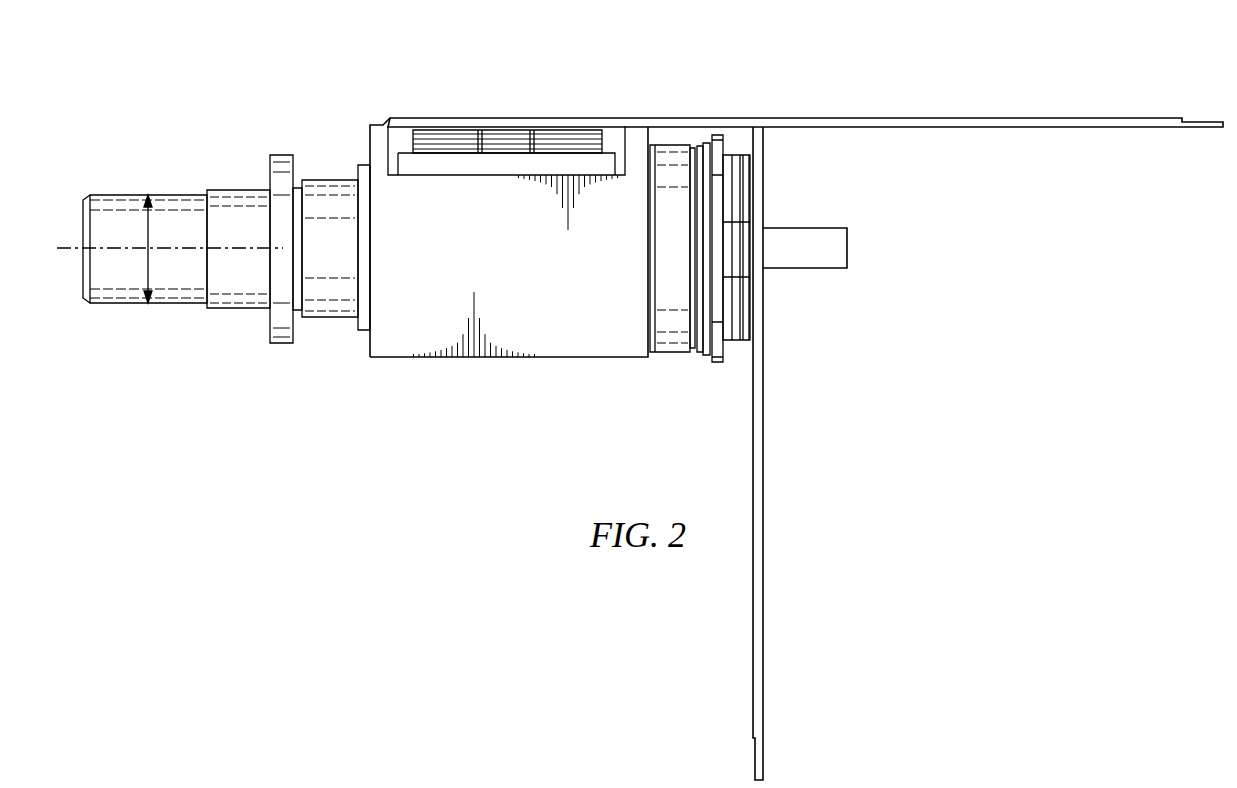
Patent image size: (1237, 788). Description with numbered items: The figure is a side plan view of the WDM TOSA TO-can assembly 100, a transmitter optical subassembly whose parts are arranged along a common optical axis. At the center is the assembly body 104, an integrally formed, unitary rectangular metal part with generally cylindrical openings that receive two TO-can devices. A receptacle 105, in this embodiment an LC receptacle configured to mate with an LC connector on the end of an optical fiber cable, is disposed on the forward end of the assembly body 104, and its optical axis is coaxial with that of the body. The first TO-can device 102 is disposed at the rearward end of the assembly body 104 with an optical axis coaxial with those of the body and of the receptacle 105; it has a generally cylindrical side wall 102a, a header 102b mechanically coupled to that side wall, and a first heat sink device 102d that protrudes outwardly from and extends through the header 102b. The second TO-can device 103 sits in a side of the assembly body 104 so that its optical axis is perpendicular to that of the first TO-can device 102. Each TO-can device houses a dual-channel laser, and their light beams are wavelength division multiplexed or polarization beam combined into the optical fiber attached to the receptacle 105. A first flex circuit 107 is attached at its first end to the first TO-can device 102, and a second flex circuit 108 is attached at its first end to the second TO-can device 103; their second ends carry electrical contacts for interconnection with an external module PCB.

The WDM TOSA TO-can assembly 100 is at (205, 30).
The first TO-can device 102 is at (790, 299).
The side wall 102a is at (714, 362).
The header 102b is at (741, 341).
The first heat sink device 102d is at (847, 248).
The second TO-can device 103 is at (484, 96).
The assembly body 104 is at (394, 358).
The receptacle 105 is at (206, 305).
The first flex circuit 107 is at (763, 466).
The second flex circuit 108 is at (1003, 117).